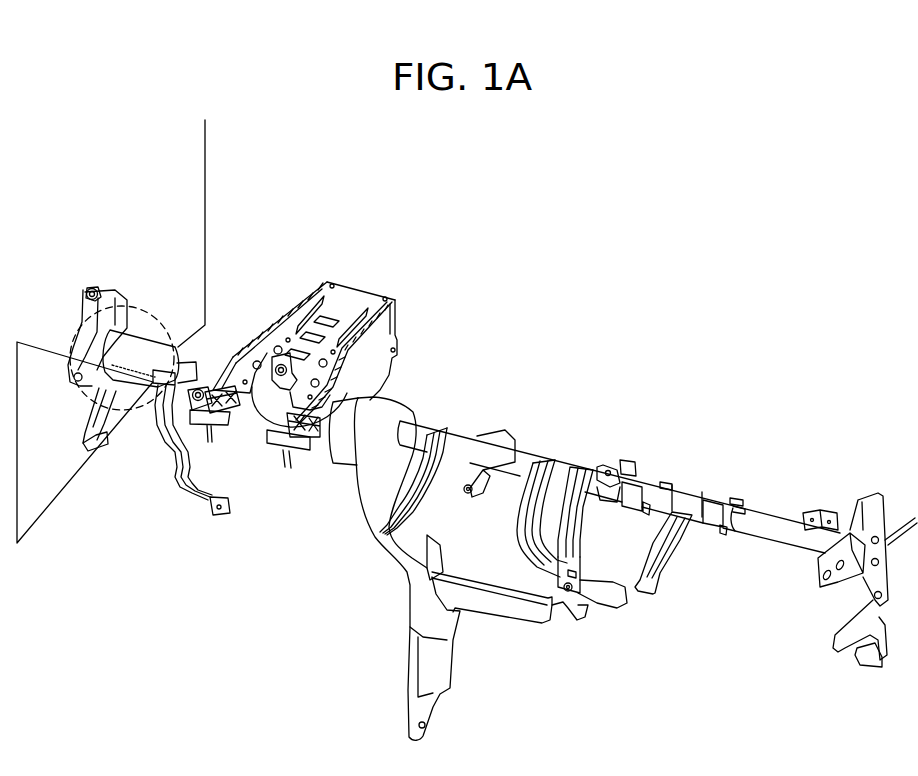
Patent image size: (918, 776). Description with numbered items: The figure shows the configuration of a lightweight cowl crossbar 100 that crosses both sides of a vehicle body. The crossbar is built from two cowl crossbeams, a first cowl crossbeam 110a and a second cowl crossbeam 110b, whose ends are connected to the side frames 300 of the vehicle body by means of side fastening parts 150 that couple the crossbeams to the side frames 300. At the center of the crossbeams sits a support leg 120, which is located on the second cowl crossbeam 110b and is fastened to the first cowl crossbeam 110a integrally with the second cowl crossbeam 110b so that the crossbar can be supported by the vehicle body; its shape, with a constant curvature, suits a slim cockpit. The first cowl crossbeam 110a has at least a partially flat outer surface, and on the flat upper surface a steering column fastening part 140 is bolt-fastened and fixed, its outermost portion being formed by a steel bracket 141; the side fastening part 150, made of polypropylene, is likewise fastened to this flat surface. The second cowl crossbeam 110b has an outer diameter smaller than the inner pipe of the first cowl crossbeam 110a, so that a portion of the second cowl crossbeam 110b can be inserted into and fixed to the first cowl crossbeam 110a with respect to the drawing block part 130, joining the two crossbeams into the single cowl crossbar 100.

The cowl crossbar 100 is at (452, 211).
The first cowl crossbeam 110a is at (132, 370).
The second cowl crossbeam 110b is at (775, 523).
The support leg 120 is at (403, 560).
The drawing block part 130 is at (377, 392).
The steering column fastening part 140 is at (391, 310).
The steel bracket 141 is at (328, 298).
The side fastening part 150 is at (94, 290).
The side frame 300 is at (147, 217).